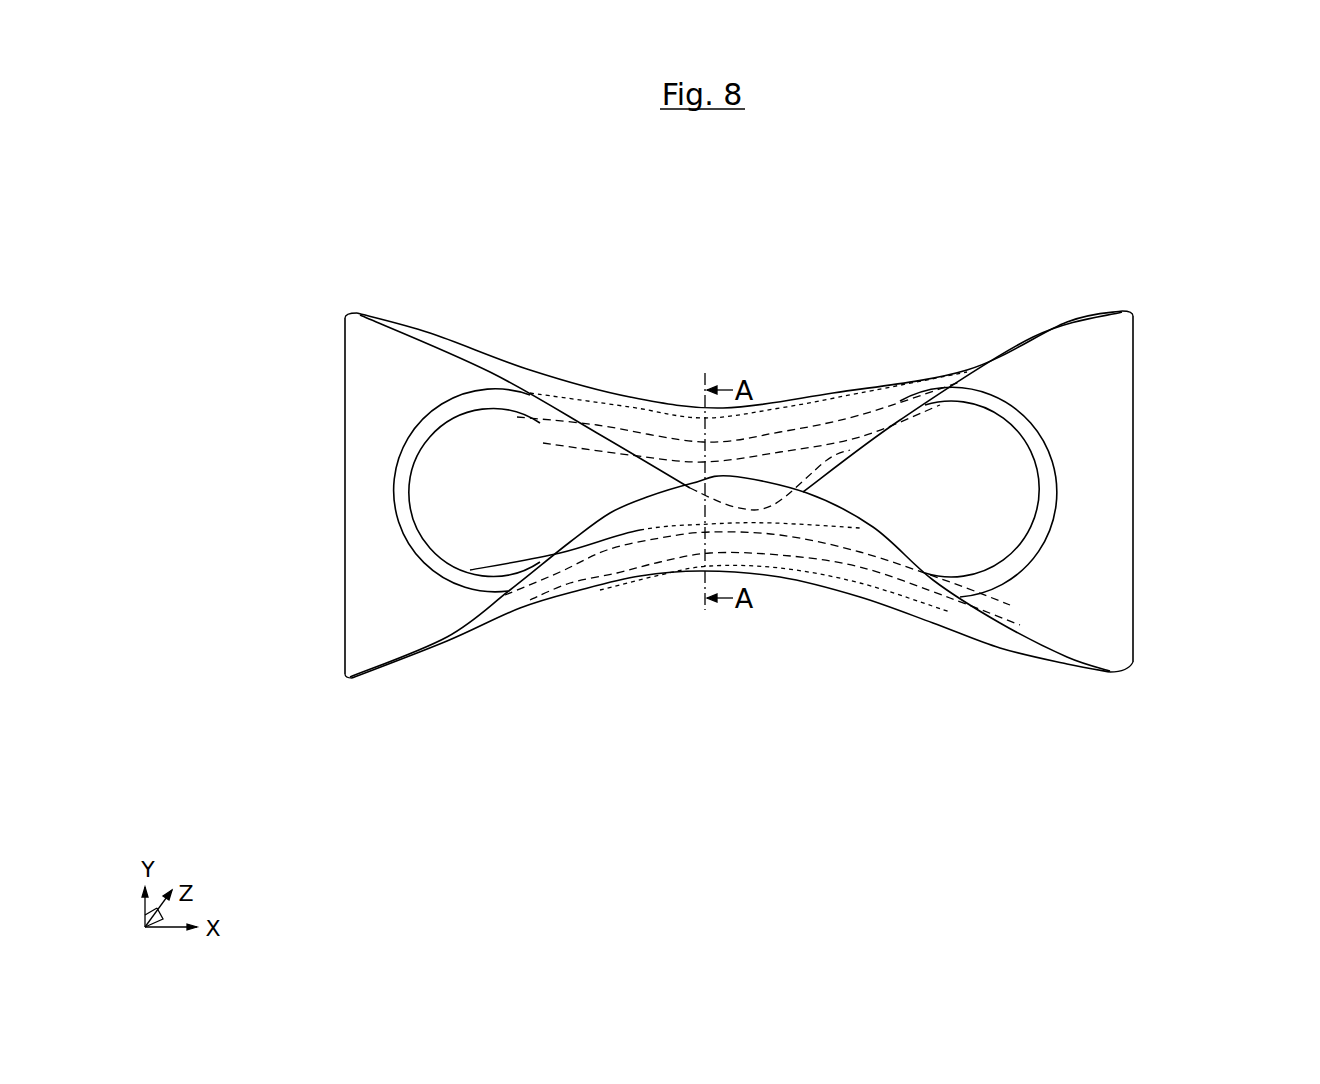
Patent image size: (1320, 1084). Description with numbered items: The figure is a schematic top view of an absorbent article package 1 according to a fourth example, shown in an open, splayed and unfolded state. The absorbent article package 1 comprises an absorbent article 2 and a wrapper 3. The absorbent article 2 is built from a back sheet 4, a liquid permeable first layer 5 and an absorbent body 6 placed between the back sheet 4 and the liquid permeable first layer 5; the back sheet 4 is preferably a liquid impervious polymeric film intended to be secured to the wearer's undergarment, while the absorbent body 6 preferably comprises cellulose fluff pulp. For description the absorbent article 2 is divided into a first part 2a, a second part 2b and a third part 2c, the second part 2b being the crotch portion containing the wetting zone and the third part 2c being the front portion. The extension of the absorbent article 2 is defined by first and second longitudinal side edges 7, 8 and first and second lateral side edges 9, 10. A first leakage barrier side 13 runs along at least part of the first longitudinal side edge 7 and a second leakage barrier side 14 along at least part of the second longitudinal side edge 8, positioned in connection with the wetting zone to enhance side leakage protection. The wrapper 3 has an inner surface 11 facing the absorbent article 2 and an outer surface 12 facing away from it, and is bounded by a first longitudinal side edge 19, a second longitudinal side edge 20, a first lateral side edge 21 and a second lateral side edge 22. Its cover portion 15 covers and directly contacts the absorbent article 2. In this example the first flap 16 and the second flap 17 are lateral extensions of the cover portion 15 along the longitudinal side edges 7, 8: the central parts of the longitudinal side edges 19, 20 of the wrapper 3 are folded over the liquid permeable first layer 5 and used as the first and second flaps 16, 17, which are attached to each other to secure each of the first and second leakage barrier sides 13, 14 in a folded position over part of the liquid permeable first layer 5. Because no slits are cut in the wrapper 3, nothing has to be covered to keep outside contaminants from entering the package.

The absorbent article package 1 is at (537, 290).
The absorbent article 2 is at (590, 287).
The first part 2a is at (481, 452).
The second part 2b is at (735, 615).
The third part 2c is at (907, 512).
The wrapper 3 is at (1095, 535).
The back sheet 4 is at (877, 518).
The liquid permeable first layer 5 is at (967, 457).
The absorbent body 6 is at (975, 520).
The first longitudinal side edge 7 is at (798, 410).
The second longitudinal side edge 8 is at (617, 575).
The first lateral side edge 9 is at (392, 513).
The second lateral side edge 10 is at (1053, 487).
The inner surface 11 is at (396, 372).
The outer surface 12 is at (1097, 342).
The first leakage barrier side 13 is at (767, 438).
The second leakage barrier side 14 is at (607, 547).
The cover portion 15 is at (440, 480).
The first flap 16 is at (695, 490).
The second flap 17 is at (727, 497).
The first longitudinal side edge 19 is at (1028, 340).
The second longitudinal side edge 20 is at (447, 637).
The first lateral side edge 21 is at (345, 603).
The second lateral side edge 22 is at (1136, 470).